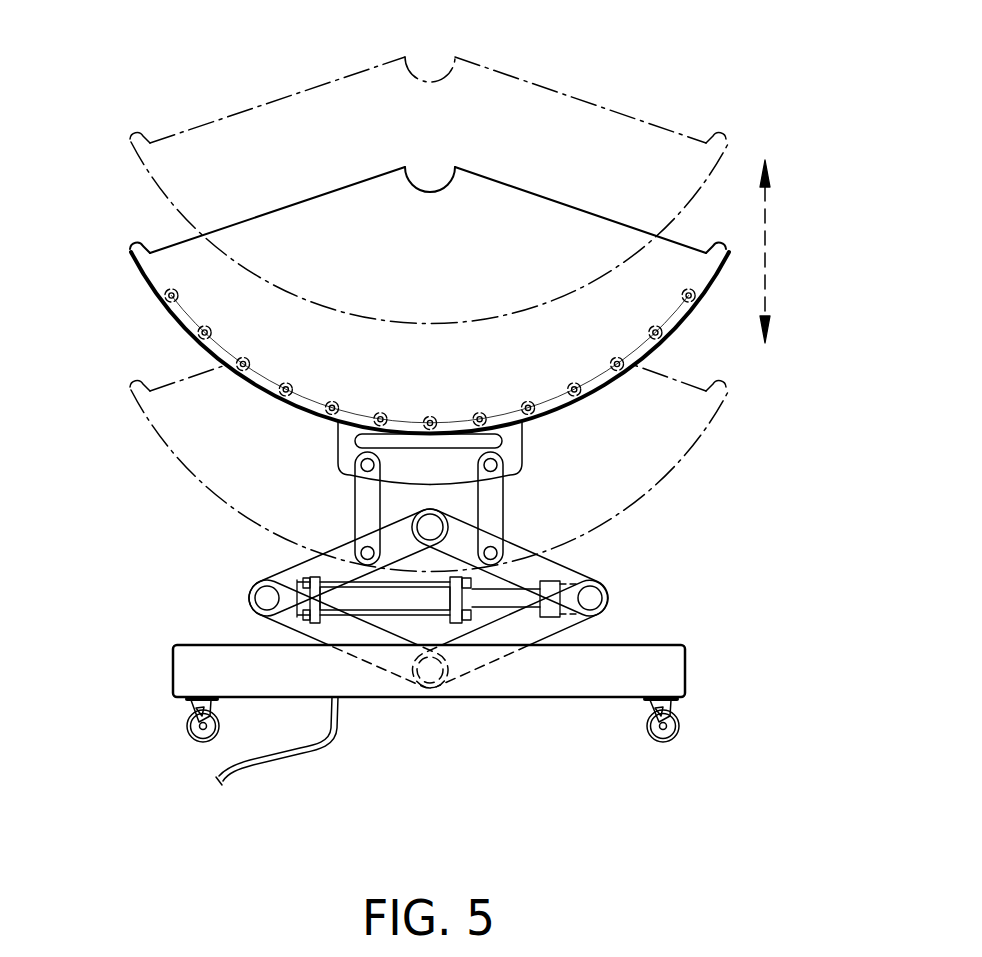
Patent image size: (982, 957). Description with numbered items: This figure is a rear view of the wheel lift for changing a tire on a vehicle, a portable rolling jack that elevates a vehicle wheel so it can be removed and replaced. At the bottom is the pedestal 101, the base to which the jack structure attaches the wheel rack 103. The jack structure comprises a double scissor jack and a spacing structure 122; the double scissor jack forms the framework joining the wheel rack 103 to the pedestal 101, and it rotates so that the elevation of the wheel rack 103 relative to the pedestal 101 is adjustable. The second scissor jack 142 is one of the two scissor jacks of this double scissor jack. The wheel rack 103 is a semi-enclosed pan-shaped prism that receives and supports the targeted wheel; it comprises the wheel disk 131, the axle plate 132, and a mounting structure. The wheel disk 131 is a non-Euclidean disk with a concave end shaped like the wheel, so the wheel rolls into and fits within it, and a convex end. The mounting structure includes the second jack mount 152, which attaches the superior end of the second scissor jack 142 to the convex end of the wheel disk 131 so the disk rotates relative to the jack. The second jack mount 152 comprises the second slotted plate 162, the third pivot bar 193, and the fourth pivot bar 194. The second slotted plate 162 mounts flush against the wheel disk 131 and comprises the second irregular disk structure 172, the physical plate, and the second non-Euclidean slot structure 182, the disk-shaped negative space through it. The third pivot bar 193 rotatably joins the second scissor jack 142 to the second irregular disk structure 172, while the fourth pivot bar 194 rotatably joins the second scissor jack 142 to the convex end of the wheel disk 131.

The pedestal 101 is at (173, 663).
The wheel rack 103 is at (233, 223).
The spacing structure 122 is at (388, 605).
The wheel disk 131 is at (727, 258).
The axle plate 132 is at (507, 250).
The second scissor jack 142 is at (543, 627).
The second jack mount 152 is at (253, 507).
The second slotted plate 162 is at (333, 452).
The second irregular disk structure 172 is at (512, 447).
The second non-Euclidean slot structure 182 is at (453, 447).
The third pivot bar 193 is at (360, 498).
The fourth pivot bar 194 is at (493, 500).